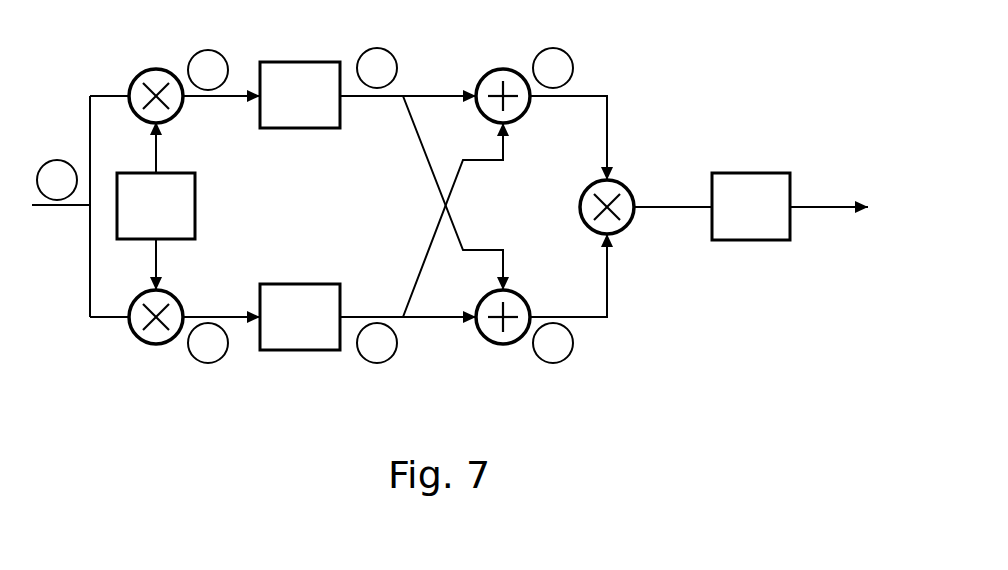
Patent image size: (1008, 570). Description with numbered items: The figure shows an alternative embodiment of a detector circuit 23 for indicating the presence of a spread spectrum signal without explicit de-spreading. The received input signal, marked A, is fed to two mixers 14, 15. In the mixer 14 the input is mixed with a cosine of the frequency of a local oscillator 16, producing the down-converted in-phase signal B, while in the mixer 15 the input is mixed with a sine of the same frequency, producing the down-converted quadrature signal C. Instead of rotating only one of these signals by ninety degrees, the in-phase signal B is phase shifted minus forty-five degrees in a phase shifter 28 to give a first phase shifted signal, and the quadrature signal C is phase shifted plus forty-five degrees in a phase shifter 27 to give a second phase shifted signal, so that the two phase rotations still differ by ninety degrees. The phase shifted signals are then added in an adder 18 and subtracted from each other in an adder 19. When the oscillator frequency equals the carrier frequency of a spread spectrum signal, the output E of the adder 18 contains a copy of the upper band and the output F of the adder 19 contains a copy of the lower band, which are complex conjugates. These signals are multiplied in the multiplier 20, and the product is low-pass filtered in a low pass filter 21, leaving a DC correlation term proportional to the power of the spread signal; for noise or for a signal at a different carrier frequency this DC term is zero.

The mixer 14 is at (137, 72).
The mixer 15 is at (137, 337).
The local oscillator 16 is at (197, 193).
The adder 18 is at (485, 72).
The adder 19 is at (483, 338).
The multiplier 20 is at (627, 183).
The low pass filter 21 is at (738, 242).
The circuit 23 is at (770, 83).
The phase shifter 27 is at (290, 352).
The phase shifter 28 is at (285, 60).